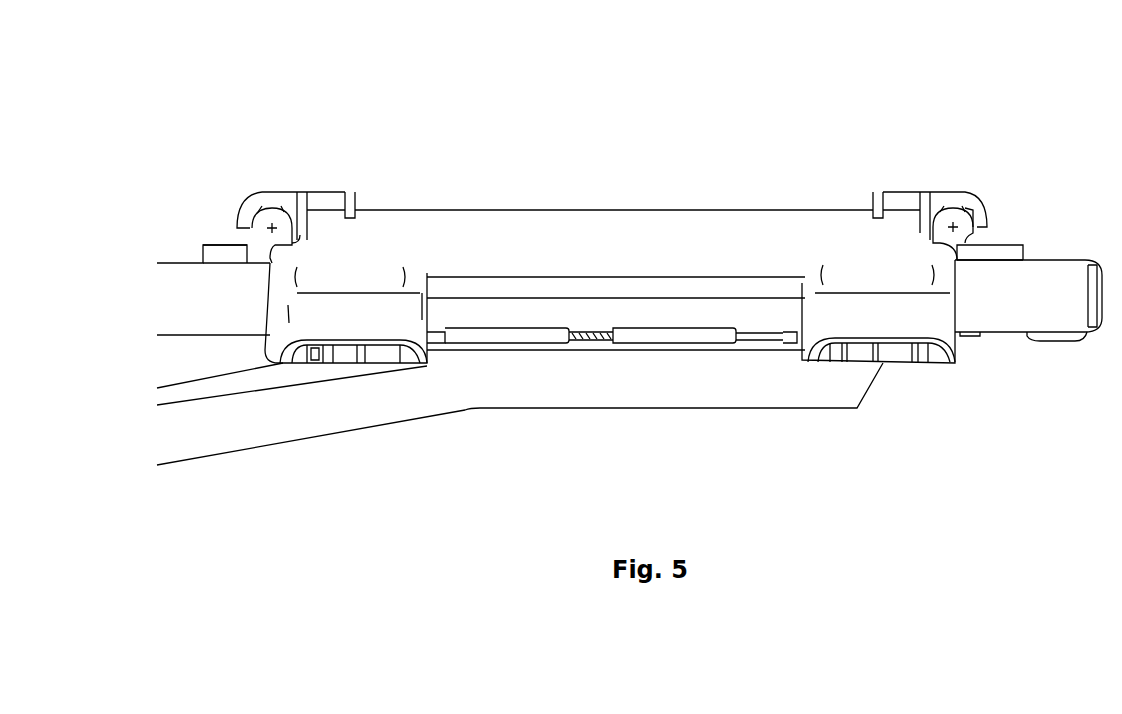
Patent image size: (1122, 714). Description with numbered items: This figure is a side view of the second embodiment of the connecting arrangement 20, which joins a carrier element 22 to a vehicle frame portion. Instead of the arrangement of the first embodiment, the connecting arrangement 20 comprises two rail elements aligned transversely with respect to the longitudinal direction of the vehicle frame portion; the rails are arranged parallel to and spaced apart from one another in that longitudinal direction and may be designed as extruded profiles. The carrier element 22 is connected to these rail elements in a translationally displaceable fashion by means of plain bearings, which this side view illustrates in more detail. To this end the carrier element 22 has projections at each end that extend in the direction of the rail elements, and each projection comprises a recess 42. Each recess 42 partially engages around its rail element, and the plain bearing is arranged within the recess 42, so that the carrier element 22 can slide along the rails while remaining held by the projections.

The connecting arrangement 20 is at (800, 126).
The carrier element 22 is at (632, 228).
The recess 42 is at (968, 209).